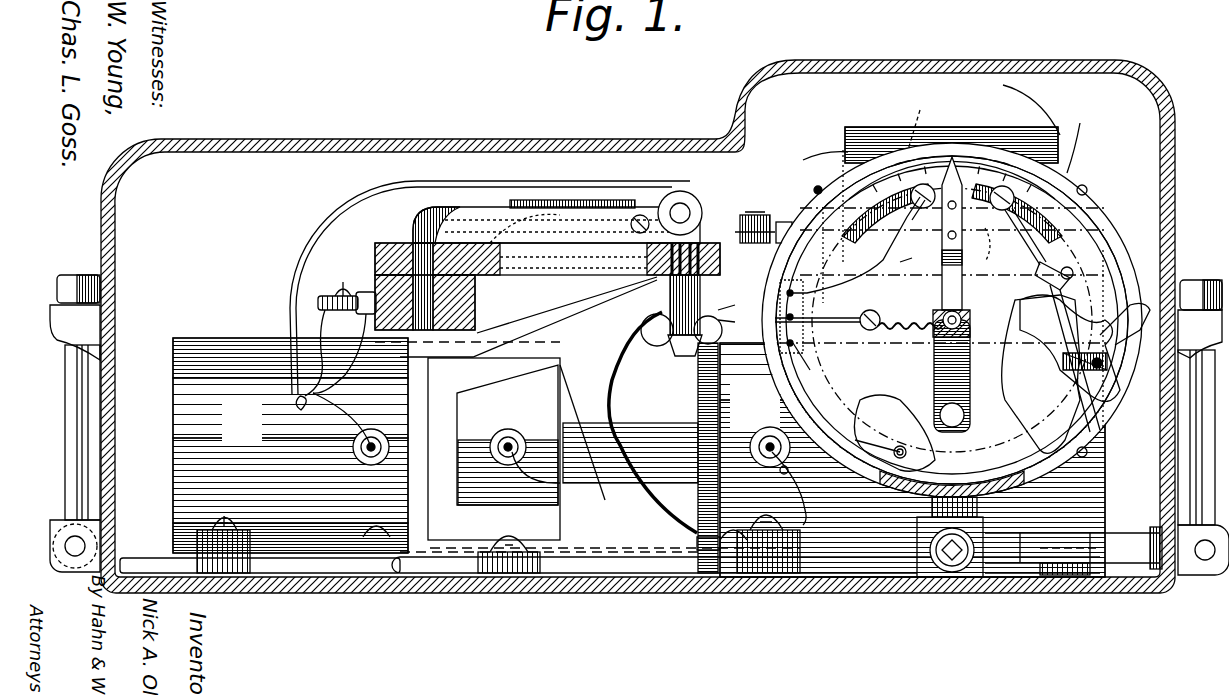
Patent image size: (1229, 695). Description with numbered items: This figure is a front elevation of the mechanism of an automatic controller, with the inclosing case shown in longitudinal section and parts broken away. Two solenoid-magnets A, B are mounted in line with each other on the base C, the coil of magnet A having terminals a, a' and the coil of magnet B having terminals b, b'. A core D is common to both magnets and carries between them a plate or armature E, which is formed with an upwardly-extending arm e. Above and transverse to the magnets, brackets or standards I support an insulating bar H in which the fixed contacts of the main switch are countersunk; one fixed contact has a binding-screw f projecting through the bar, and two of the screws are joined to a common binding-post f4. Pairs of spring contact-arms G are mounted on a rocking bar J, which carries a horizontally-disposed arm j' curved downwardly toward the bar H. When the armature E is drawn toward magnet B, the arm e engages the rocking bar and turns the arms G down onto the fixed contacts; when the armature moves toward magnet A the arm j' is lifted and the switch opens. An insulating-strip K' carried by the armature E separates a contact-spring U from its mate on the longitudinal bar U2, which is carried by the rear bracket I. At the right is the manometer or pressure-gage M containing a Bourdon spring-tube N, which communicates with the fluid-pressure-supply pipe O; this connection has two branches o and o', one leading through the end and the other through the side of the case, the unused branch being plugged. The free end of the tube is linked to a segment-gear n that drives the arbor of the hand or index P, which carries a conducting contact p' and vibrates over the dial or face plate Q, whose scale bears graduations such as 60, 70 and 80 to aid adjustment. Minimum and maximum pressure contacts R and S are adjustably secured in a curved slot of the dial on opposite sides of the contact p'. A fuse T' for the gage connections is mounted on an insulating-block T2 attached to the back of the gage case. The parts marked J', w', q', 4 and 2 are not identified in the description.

The base C is at (640, 580).
The solenoid-magnet A is at (290, 445).
The terminal of coil of magnet A a is at (371, 430).
The terminal of coil of magnet A a' is at (525, 442).
The solenoid-magnet B is at (834, 460).
The terminal of coil of magnet B b is at (886, 430).
The terminal of coil of magnet B b' is at (778, 464).
The core D is at (694, 412).
The plate or armature E is at (695, 380).
The spring contact-arm G is at (556, 221).
The insulating bar H is at (547, 286).
The bracket or standard I is at (516, 445).
The rocking bar J is at (685, 259).
The roller J' is at (681, 343).
The horizontally-disposed arm j' is at (490, 231).
The insulating-strip K' is at (755, 216).
The contact-spring U is at (781, 216).
The longitudinal bar U2 is at (800, 311).
The upwardly-extending arm e is at (620, 287).
The binding-screw f is at (363, 292).
The common binding-post f4 is at (333, 298).
The contact w' is at (731, 310).
The manometer or pressure-gage M is at (952, 320).
The Bourdon spring-tube N is at (1063, 270).
The segment-gear n is at (1015, 325).
The hand or index P is at (927, 370).
The conducting contact p' is at (981, 236).
The dial or face plate Q is at (1037, 374).
The link q' is at (857, 245).
The minimum pressure contact R is at (915, 190).
The maximum pressure contact S is at (1022, 188).
The fuse T' is at (913, 123).
The insulating-block T2 is at (872, 122).
The fluid-pressure-supply pipe O is at (1005, 577).
The branch of pressure-supply connection o is at (1065, 588).
The branch of pressure-supply connection o' is at (941, 556).
The scale graduation 60 is at (903, 174).
The scale graduation 70 is at (950, 160).
The scale graduation 80 is at (989, 174).
The index mark 4 is at (985, 239).
The index mark 2 is at (909, 260).